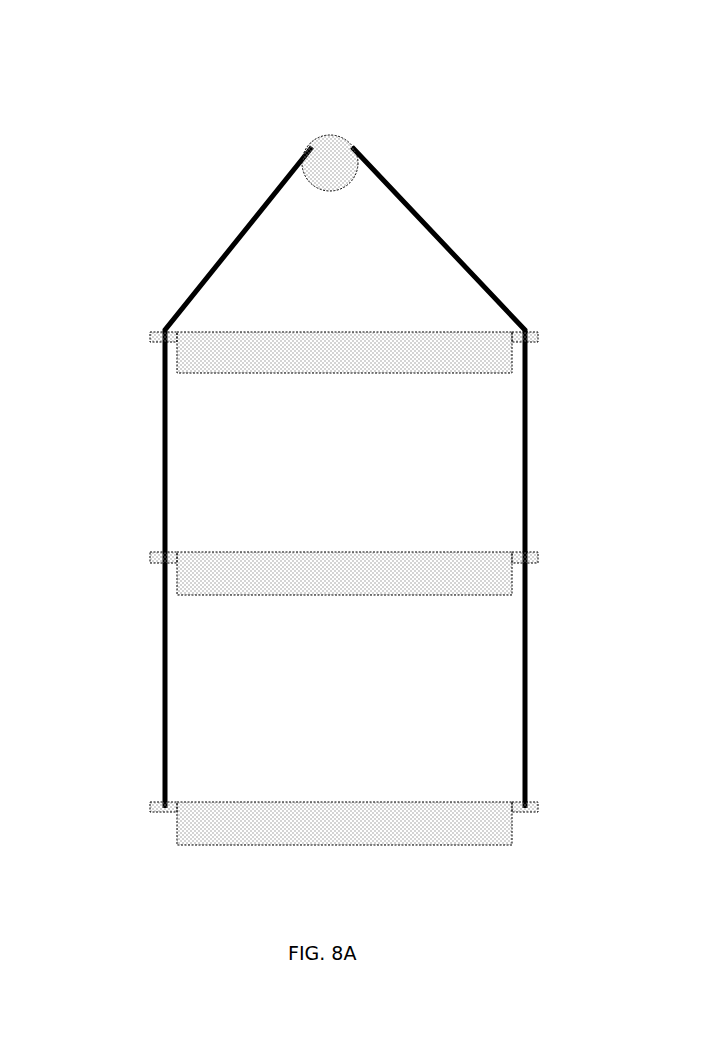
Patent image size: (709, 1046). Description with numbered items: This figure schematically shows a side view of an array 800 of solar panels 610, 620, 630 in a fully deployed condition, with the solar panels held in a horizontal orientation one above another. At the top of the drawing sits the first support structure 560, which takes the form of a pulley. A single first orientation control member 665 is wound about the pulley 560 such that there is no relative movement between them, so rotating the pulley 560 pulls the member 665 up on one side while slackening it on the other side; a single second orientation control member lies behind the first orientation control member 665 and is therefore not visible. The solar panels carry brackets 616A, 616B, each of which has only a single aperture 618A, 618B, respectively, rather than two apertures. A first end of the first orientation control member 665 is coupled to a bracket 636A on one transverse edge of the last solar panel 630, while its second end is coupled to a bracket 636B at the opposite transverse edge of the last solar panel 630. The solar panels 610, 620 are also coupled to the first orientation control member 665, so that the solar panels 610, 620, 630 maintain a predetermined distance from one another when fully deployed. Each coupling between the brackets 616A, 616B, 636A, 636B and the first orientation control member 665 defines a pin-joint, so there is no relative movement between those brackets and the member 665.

The array 800 is at (264, 135).
The first support structure 560 is at (328, 170).
The first orientation control member 665 is at (246, 228).
The solar panel 610 is at (245, 348).
The solar panel 620 is at (232, 570).
The last solar panel 630 is at (235, 818).
The bracket 616A is at (540, 335).
The bracket 616B is at (152, 336).
The aperture 618A is at (530, 330).
The aperture 618B is at (165, 330).
The bracket 636A is at (536, 807).
The bracket 636B is at (152, 806).